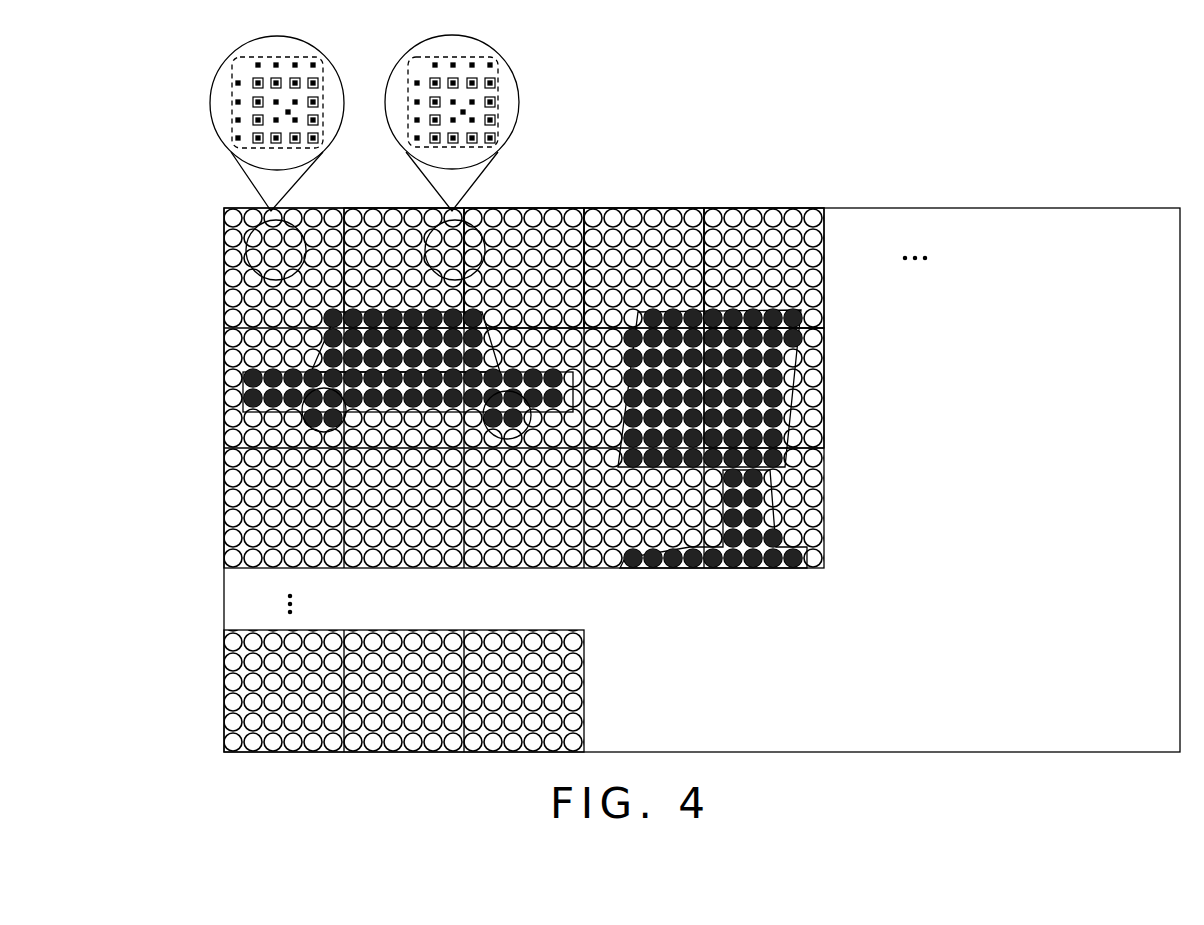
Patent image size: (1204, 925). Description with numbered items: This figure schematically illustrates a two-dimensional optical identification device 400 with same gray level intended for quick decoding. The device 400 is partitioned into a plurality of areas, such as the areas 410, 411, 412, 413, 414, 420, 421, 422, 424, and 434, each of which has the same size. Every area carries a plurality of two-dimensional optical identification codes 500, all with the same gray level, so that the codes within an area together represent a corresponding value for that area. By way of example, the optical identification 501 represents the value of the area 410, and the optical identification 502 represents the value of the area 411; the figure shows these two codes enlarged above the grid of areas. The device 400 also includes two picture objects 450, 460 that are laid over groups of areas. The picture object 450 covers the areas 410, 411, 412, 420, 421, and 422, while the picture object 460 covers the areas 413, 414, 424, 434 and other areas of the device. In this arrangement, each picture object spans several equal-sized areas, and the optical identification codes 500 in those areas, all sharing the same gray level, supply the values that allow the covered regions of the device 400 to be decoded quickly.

The two-dimensional optical identification device 400 is at (130, 204).
The area 410 is at (224, 258).
The area 411 is at (405, 207).
The area 412 is at (522, 207).
The area 413 is at (685, 243).
The area 414 is at (812, 292).
The area 420 is at (243, 394).
The area 421 is at (487, 422).
The area 422 is at (455, 449).
The area 424 is at (802, 416).
The area 434 is at (790, 548).
The picture object 450 is at (316, 353).
The picture object 460 is at (801, 357).
The two-dimensional optical identification code 500 is at (374, 123).
The optical identification 501 is at (211, 99).
The optical identification 502 is at (519, 100).